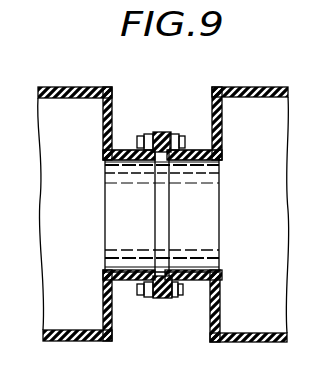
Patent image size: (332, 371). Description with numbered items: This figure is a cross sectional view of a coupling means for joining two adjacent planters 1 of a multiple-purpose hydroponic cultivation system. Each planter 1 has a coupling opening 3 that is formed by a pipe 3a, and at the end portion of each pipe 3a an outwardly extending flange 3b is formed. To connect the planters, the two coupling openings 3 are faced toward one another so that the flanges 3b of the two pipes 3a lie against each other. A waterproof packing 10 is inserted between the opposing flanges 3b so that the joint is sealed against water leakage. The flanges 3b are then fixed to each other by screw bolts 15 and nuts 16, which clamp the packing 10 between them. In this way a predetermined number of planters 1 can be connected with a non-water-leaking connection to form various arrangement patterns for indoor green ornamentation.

The planter 1 is at (77, 86).
The coupling opening 3 is at (117, 218).
The pipe 3a is at (128, 160).
The flange 3b is at (153, 134).
The waterproof packing 10 is at (160, 131).
The screw bolt 15 is at (175, 290).
The nut 16 is at (145, 298).